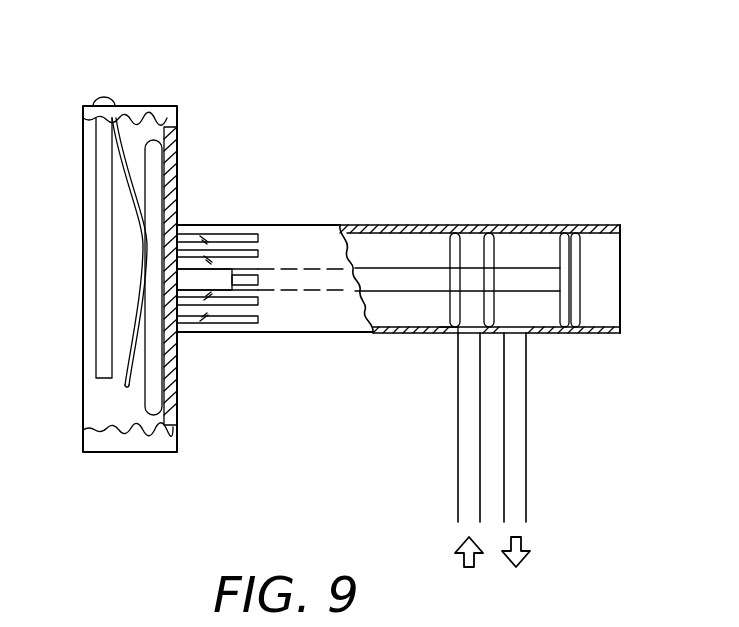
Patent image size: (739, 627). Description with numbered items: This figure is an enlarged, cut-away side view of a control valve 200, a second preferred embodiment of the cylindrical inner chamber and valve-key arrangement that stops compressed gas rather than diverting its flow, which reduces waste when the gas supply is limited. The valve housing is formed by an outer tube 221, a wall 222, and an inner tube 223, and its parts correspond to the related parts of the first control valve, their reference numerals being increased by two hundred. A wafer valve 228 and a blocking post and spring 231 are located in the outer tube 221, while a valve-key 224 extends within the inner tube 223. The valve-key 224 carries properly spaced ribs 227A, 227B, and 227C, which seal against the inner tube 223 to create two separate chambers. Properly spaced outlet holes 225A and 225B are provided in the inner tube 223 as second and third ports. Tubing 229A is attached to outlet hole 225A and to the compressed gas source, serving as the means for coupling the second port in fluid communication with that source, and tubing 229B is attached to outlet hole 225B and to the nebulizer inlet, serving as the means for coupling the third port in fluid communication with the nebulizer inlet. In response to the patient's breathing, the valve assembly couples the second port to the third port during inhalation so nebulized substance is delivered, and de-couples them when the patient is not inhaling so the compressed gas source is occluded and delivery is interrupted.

The control valve 200 is at (548, 104).
The outer tube 221 is at (118, 452).
The wall 222 is at (178, 133).
The inner tube 223 is at (602, 334).
The valve-key 224 is at (402, 275).
The outlet hole 225A is at (465, 345).
The outlet hole 225B is at (520, 345).
The rib 227A is at (487, 235).
The rib 227B is at (563, 232).
The rib 227C is at (457, 331).
The wafer valve 228 is at (155, 140).
The tubing 229A is at (458, 490).
The tubing 229B is at (527, 487).
The blocking post and spring 231 is at (100, 95).